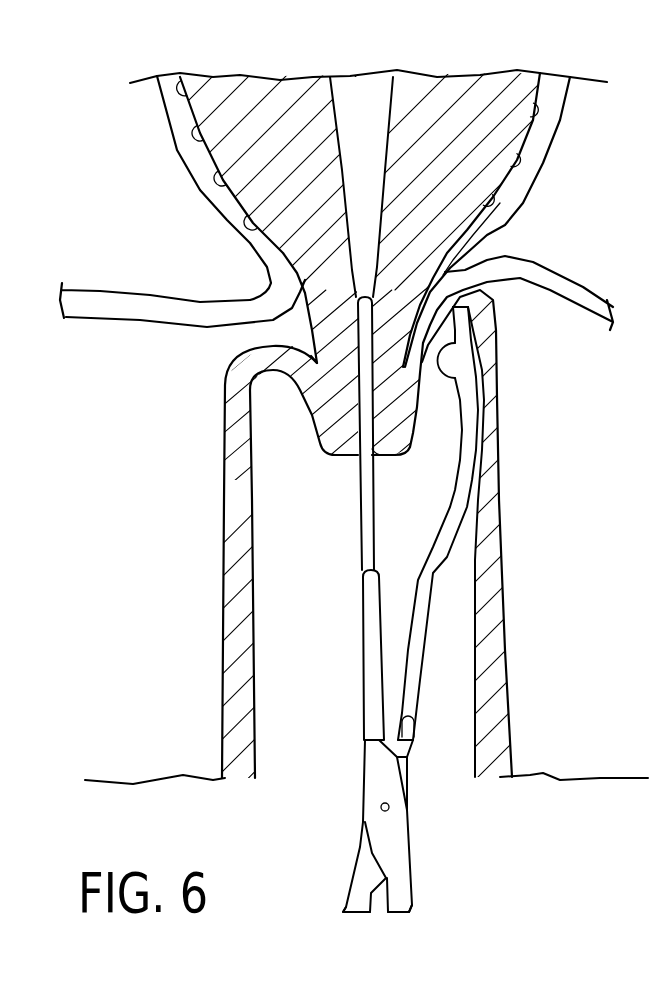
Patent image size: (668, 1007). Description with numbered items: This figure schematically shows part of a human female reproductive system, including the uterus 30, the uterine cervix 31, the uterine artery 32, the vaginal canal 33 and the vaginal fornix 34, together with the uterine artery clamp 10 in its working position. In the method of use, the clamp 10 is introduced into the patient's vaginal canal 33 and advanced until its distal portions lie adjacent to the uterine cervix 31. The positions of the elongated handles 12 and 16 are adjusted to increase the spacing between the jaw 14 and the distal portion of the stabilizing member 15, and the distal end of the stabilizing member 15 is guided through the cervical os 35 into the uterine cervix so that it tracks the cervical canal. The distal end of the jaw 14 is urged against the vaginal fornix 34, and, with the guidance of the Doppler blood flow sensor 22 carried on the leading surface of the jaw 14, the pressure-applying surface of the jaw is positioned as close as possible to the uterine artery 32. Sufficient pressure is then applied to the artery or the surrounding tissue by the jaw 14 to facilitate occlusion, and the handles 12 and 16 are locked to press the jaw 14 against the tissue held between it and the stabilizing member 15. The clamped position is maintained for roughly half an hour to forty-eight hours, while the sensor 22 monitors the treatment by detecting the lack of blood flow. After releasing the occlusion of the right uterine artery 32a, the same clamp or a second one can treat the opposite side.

The intra-uterine occluding clamp 10 is at (364, 812).
The elongated handle 12 is at (347, 905).
The jaw 14 is at (452, 386).
The stabilizing member 15 is at (361, 490).
The elongated handle 16 is at (413, 903).
The blood flow sensor 22 is at (467, 293).
The uterus 30 is at (497, 137).
The uterine cervix 31 is at (397, 437).
The uterine artery 32 is at (577, 274).
The right uterine artery 32a is at (127, 290).
The vaginal canal 33 is at (322, 610).
The vaginal fornix 34 is at (444, 343).
The cervical os 35 is at (374, 450).